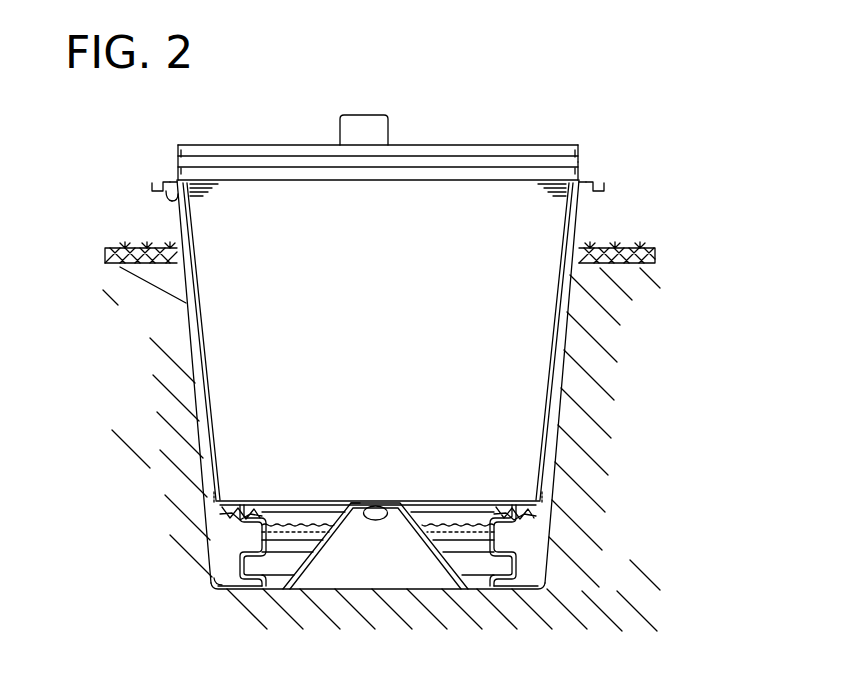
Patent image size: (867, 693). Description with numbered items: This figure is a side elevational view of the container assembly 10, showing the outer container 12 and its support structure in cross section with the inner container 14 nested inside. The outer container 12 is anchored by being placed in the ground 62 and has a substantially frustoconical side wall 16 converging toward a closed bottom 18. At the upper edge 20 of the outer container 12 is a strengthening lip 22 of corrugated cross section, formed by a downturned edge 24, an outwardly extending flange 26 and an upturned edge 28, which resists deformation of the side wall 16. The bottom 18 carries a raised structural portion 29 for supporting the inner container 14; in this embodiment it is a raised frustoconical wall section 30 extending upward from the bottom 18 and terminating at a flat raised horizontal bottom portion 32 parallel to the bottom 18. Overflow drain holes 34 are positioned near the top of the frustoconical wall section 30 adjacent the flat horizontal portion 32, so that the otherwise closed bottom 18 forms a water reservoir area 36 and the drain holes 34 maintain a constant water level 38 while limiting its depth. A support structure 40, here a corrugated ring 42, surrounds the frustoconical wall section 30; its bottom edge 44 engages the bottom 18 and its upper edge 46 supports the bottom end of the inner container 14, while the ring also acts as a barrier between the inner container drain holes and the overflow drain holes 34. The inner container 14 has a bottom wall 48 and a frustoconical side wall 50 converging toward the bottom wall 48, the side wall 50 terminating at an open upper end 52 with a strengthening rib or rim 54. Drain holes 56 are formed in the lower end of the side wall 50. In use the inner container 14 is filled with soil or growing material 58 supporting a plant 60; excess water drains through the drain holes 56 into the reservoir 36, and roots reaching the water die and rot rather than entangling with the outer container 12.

The container assembly 10 is at (450, 348).
The outer container 12 is at (579, 231).
The inner container 14 is at (458, 141).
The side wall 16 is at (565, 338).
The bottom 18 is at (500, 592).
The upper edge 20 is at (188, 172).
The strengthening lip 22 is at (146, 186).
The downturned edge 24 is at (173, 204).
The outwardly extending flange 26 is at (163, 192).
The upturned edge 28 is at (157, 182).
The raised structural portion 29 is at (356, 498).
The frustoconical wall section 30 is at (323, 556).
The flat raised horizontal bottom portion 32 is at (383, 502).
The overflow drain holes 34 is at (380, 521).
The water reservoir area 36 is at (525, 557).
The water level 38 is at (451, 514).
The support structure 40 is at (240, 553).
The corrugated ring 42 is at (226, 586).
The bottom edge 44 is at (210, 583).
The upper edge 46 is at (242, 512).
The bottom wall 48 is at (290, 509).
The frustoconical side wall 50 is at (199, 350).
The open upper end 52 is at (577, 141).
The strengthening rib or rim 54 is at (582, 153).
The drain holes 56 is at (216, 502).
The soil or growing material 58 is at (247, 290).
The plant 60 is at (391, 125).
The ground 62 is at (234, 541).